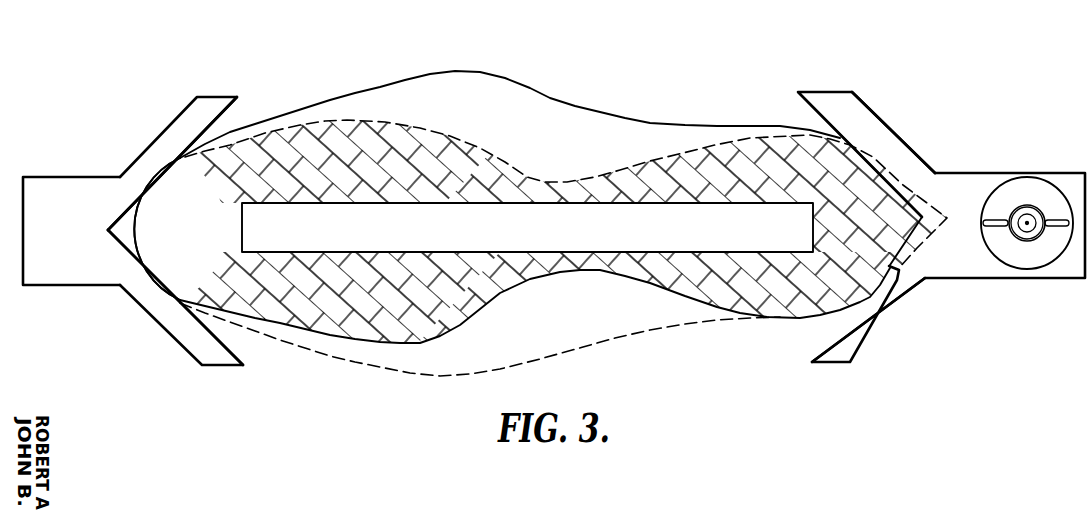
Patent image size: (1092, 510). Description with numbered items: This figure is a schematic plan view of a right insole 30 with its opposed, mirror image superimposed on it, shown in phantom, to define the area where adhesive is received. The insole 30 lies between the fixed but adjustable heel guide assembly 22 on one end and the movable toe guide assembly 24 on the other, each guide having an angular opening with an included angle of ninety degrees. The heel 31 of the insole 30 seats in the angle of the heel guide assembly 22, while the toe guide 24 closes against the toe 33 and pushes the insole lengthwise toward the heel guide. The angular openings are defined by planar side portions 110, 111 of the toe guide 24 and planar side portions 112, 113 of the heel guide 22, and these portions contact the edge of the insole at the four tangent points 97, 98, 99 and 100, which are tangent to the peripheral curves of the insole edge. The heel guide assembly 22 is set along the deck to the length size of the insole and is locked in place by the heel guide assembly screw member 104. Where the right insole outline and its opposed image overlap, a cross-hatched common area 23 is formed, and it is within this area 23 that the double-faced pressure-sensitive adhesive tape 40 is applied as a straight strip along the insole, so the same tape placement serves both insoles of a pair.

The heel guide assembly 22 is at (1005, 162).
The common area 23 is at (355, 153).
The toe guide assembly 24 is at (133, 228).
The insole 30 is at (868, 209).
The heel 31 is at (933, 207).
The toe 33 is at (167, 229).
The double-faced pressure-sensitive adhesive tape 40 is at (709, 232).
The tangent point 97 is at (160, 287).
The tangent point 98 is at (163, 180).
The tangent point 99 is at (907, 293).
The tangent point 100 is at (908, 150).
The heel guide assembly screw member 104 is at (1028, 193).
The planar side portion 110 is at (216, 336).
The planar side portion 111 is at (216, 129).
The planar side portion 112 is at (833, 326).
The planar side portion 113 is at (866, 102).